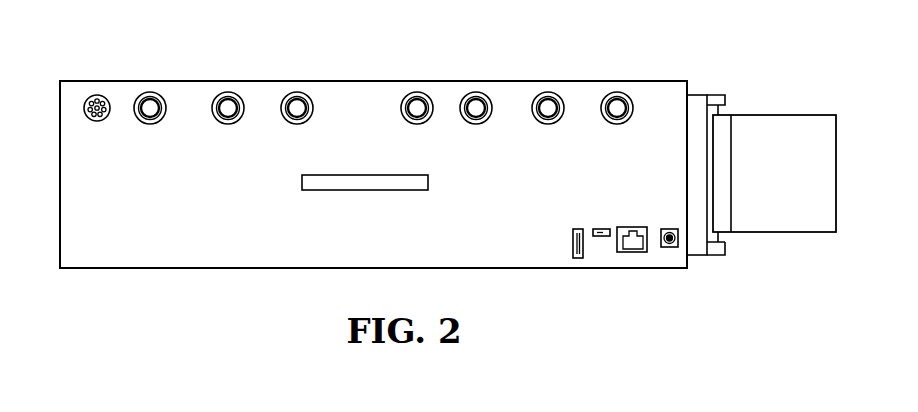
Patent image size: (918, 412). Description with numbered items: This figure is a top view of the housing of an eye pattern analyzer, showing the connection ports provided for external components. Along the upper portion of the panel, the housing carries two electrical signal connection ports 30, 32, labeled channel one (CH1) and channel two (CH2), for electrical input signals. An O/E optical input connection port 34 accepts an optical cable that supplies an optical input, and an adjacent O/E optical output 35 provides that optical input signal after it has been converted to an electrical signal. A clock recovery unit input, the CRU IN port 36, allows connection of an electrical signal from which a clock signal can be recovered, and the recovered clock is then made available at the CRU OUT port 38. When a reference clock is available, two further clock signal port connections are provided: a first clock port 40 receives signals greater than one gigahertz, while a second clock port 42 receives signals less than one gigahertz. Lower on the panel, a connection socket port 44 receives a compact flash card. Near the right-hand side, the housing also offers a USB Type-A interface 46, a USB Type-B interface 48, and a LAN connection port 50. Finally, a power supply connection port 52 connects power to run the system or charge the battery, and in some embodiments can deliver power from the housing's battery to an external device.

The electrical signal connection port 30 is at (236, 92).
The electrical signal connection port 32 is at (304, 92).
The O/E optical input connection port 34 is at (97, 95).
The O/E optical output 35 is at (157, 92).
The CRU IN port 36 is at (420, 92).
The CRU OUT port 38 is at (480, 92).
The first clock port 40 is at (545, 92).
The second clock port 42 is at (613, 92).
The connection socket port 44 is at (377, 190).
The USB Type-A interface 46 is at (580, 262).
The USB Type-B interface 48 is at (607, 229).
The LAN connection port 50 is at (647, 253).
The power supply connection port 52 is at (677, 229).